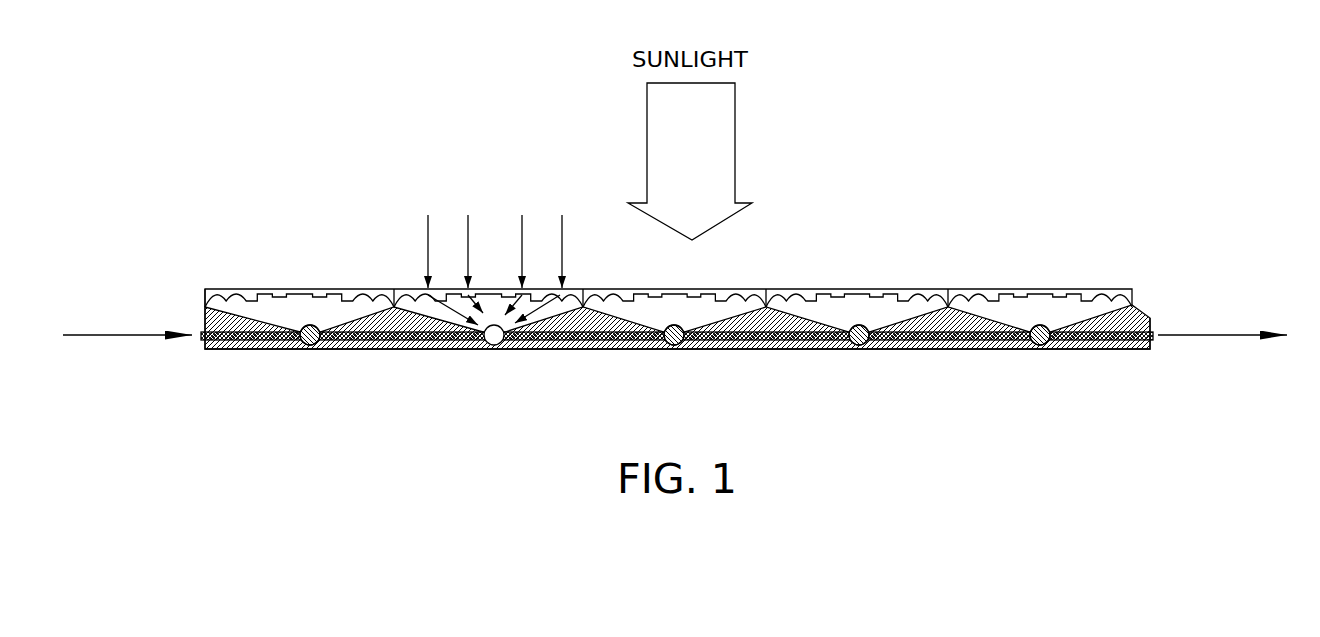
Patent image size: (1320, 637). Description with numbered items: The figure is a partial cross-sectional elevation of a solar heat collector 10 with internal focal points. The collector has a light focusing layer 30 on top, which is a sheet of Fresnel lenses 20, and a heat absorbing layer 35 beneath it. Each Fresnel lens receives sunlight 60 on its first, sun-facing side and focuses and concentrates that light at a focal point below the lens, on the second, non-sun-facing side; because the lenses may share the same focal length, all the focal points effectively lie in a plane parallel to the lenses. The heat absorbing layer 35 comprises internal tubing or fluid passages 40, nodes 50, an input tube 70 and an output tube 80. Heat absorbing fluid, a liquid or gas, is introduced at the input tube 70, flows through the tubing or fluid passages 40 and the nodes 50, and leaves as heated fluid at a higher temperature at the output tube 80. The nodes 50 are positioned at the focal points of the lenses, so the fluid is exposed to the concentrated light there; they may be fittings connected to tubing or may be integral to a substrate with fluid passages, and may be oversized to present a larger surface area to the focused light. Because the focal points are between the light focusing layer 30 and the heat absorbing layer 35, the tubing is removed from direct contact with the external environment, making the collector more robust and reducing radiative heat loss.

The solar heat collector 10 is at (987, 91).
The Fresnel lenses 20 is at (1003, 288).
The light focusing layer 30 is at (202, 288).
The heat absorbing layer 35 is at (203, 315).
The internal tubing or fluid passages 40 is at (547, 349).
The nodes 50 is at (861, 325).
The sunlight 60 is at (583, 205).
The input tube 70 is at (118, 335).
The output tube 80 is at (1170, 335).